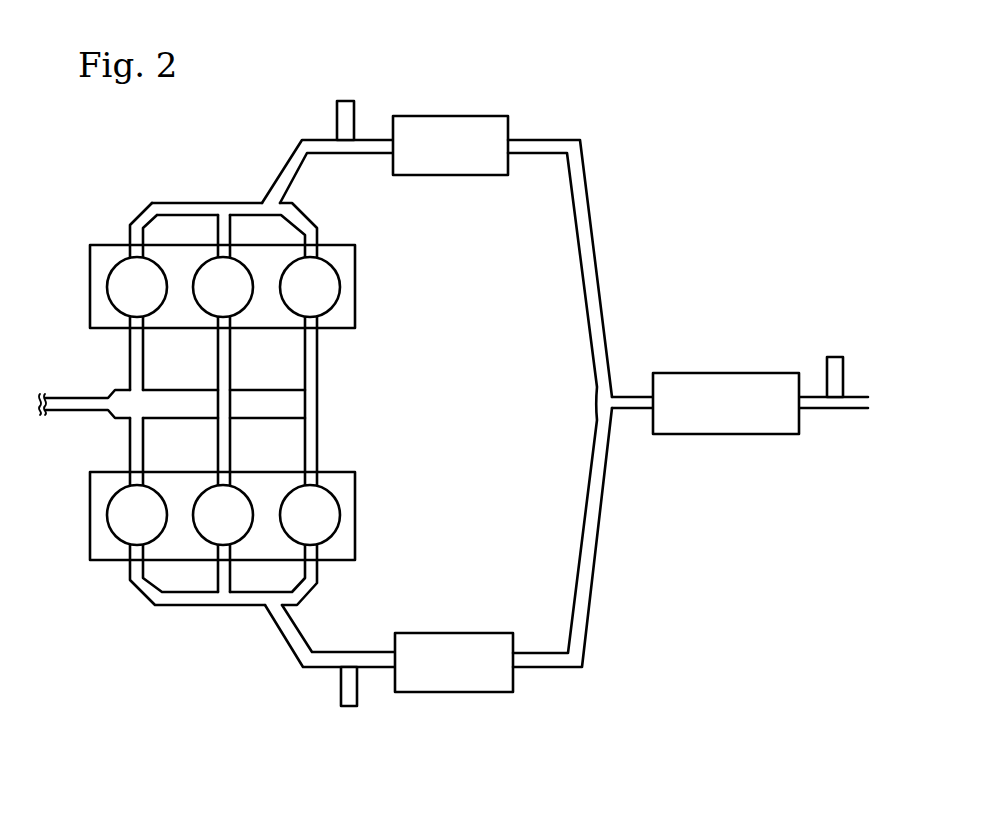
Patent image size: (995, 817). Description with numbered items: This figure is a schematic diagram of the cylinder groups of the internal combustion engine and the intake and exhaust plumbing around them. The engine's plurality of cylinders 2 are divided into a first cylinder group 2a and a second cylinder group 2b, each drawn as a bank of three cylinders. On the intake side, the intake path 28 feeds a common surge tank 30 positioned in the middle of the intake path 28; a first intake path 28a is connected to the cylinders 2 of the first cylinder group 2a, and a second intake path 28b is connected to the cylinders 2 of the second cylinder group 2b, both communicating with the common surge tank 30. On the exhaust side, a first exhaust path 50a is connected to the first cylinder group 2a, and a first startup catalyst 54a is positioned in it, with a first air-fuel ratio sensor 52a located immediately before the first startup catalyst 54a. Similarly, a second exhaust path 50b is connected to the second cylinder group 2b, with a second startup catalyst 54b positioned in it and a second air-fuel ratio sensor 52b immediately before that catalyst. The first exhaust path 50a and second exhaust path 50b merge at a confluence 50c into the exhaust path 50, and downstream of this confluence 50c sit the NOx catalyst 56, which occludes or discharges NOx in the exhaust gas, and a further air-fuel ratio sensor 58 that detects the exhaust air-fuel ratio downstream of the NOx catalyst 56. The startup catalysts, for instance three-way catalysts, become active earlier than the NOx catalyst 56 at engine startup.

The cylinders 2 is at (328, 268).
The first cylinder group 2a is at (396, 228).
The second cylinder group 2b is at (401, 460).
The intake path 28 is at (75, 397).
The first intake path 28a is at (313, 370).
The second intake path 28b is at (313, 435).
The surge tank 30 is at (262, 405).
The exhaust path 50 is at (635, 395).
The first exhaust path 50a is at (286, 165).
The second exhaust path 50b is at (290, 647).
The confluence 50c is at (597, 403).
The first air-fuel ratio sensor 52a is at (347, 101).
The second air-fuel ratio sensor 52b is at (349, 706).
The first startup catalyst 54a is at (460, 116).
The second startup catalyst 54b is at (467, 692).
The NOx catalyst 56 is at (727, 373).
The air-fuel ratio sensor 58 is at (836, 357).